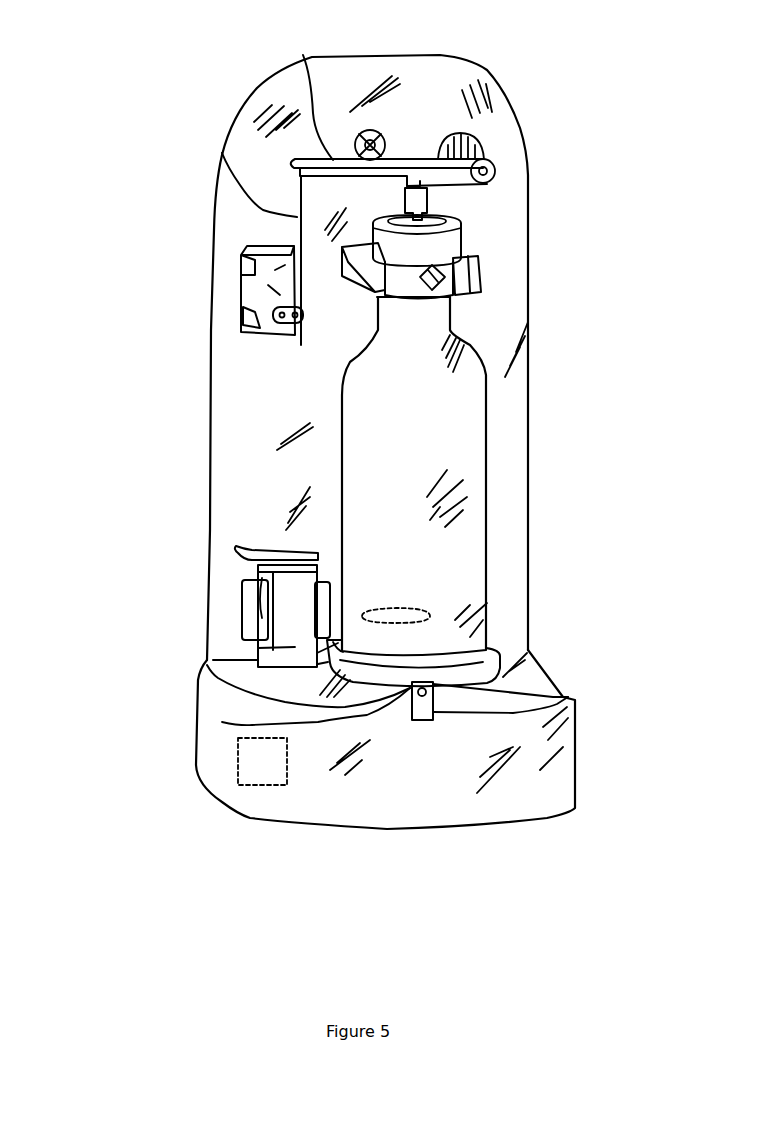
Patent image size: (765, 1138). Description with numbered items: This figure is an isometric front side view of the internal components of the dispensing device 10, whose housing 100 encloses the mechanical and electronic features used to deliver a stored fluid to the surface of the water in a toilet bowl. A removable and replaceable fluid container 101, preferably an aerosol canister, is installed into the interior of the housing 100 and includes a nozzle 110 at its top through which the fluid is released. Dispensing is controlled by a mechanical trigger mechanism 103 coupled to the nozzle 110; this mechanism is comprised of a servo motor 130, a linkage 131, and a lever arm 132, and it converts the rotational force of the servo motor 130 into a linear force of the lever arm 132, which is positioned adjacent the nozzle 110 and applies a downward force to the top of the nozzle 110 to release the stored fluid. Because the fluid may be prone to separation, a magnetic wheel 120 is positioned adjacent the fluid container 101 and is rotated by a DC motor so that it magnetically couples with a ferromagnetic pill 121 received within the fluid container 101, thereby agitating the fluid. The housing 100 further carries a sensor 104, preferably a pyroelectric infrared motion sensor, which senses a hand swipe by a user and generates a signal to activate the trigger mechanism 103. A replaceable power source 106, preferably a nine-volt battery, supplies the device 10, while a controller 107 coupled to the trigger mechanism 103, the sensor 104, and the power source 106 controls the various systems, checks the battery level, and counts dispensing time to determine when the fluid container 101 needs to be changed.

The device 10 is at (139, 74).
The housing 100 is at (520, 292).
The fluid container 101 is at (468, 448).
The mechanical trigger mechanism 103 is at (198, 224).
The sensor 104 is at (222, 722).
The power source 106 is at (258, 649).
The controller 107 is at (267, 742).
The nozzle 110 is at (430, 203).
The magnetic wheel 120 is at (496, 661).
The ferromagnetic pill 121 is at (427, 617).
The servo motor 130 is at (243, 292).
The linkage 131 is at (222, 153).
The lever arm 132 is at (303, 55).